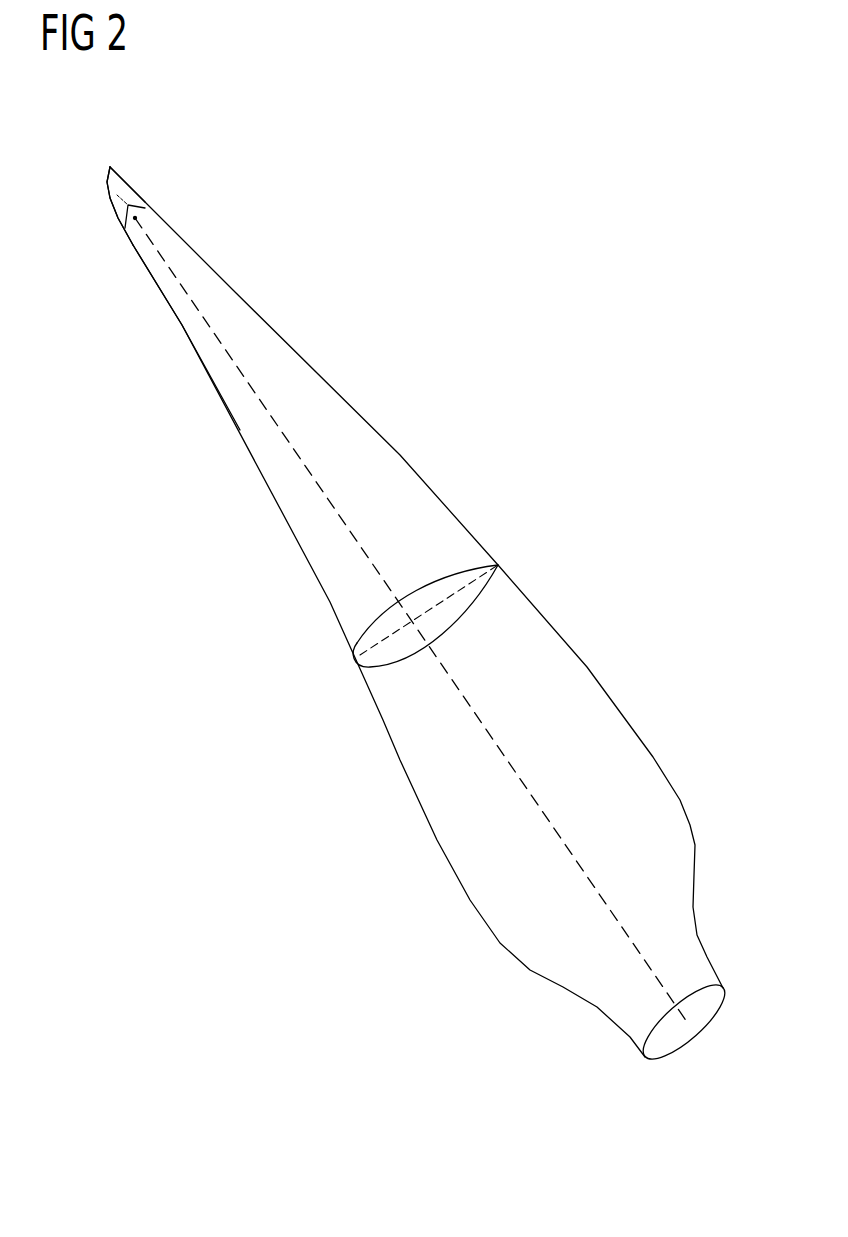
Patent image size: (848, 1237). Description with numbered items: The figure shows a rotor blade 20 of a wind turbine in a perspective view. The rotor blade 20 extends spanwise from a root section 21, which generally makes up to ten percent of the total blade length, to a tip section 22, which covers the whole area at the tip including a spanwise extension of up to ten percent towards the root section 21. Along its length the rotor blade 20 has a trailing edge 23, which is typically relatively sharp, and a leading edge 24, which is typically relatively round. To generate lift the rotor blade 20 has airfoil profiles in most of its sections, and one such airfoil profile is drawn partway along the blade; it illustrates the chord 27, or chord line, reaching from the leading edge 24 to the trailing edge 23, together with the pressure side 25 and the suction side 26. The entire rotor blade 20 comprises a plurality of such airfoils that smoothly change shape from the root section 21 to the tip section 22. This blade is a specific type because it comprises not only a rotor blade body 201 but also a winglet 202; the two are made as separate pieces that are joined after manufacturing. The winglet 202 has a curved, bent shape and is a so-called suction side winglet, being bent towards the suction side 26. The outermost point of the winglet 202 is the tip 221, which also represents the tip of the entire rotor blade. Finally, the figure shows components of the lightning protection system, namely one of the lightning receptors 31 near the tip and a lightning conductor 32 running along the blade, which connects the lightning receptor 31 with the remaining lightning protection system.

The rotor blade 20 is at (551, 383).
The root section 21 is at (705, 975).
The tip section 22 is at (163, 227).
The trailing edge 23 is at (587, 668).
The leading edge 24 is at (422, 810).
The pressure side 25 is at (452, 624).
The suction side 26 is at (423, 586).
The chord 27 is at (388, 640).
The lightning receptor 31 is at (147, 204).
The lightning conductor 32 is at (560, 835).
The rotor blade body 201 is at (186, 327).
The winglet 202 is at (105, 190).
The tip 221 is at (109, 165).